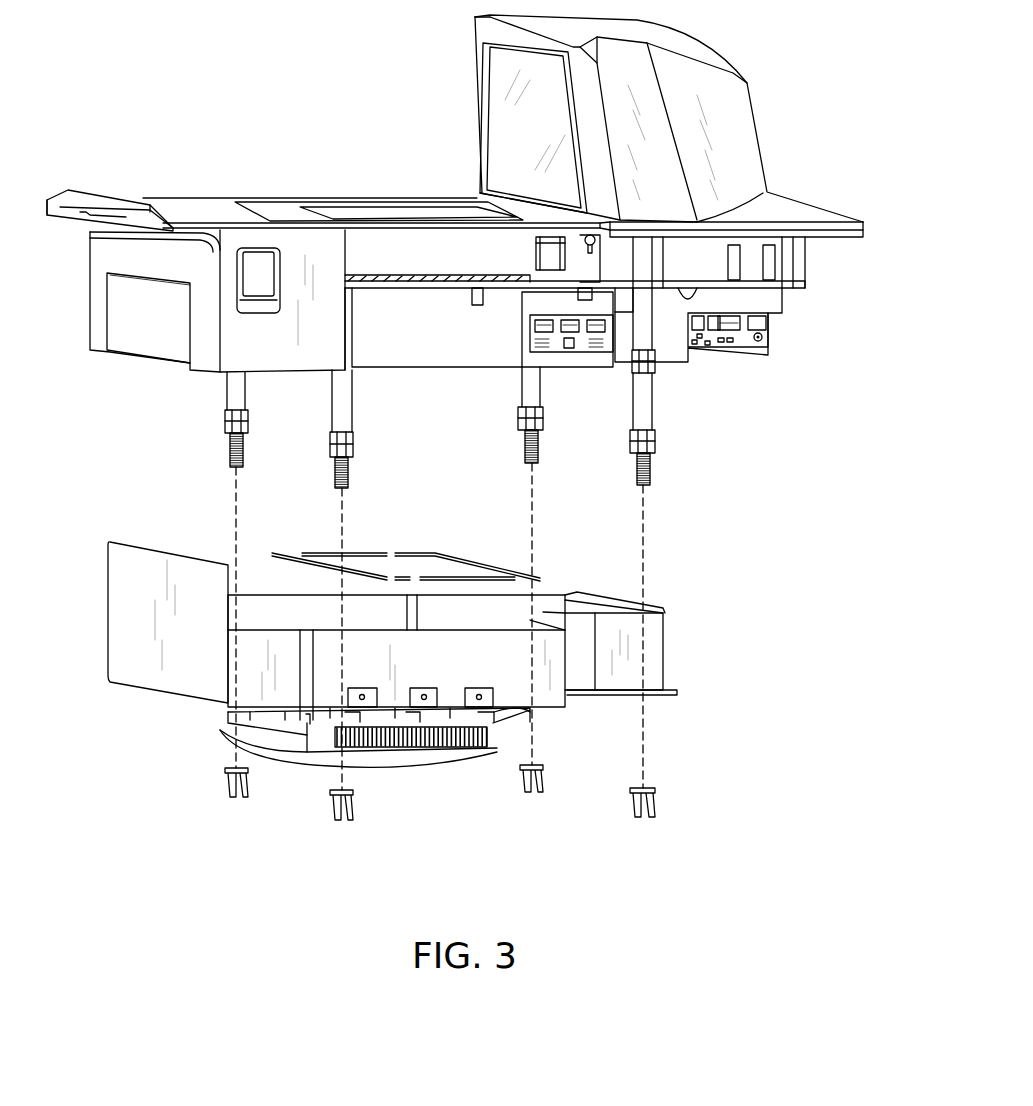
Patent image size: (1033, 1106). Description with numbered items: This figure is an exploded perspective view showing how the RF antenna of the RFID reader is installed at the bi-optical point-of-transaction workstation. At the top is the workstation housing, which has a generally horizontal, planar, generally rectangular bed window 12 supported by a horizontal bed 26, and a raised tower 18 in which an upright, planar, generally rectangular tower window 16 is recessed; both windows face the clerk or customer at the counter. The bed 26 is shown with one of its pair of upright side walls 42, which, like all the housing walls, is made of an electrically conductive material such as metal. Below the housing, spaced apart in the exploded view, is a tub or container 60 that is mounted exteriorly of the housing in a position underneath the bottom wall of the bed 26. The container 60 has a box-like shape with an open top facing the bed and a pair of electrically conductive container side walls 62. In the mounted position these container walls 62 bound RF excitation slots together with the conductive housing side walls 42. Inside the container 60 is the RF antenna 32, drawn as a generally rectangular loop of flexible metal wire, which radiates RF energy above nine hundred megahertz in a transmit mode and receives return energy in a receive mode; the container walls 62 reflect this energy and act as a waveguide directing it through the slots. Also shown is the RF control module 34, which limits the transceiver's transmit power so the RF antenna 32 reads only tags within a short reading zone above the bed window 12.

The bed window 12 is at (405, 212).
The tower window 16 is at (508, 140).
The tower 18 is at (733, 72).
The bed 26 is at (208, 203).
The side walls 42 is at (327, 243).
The RF antenna 32 is at (437, 552).
The RF control module 34 is at (433, 765).
The container 60 is at (670, 635).
The container side walls 62 is at (260, 595).